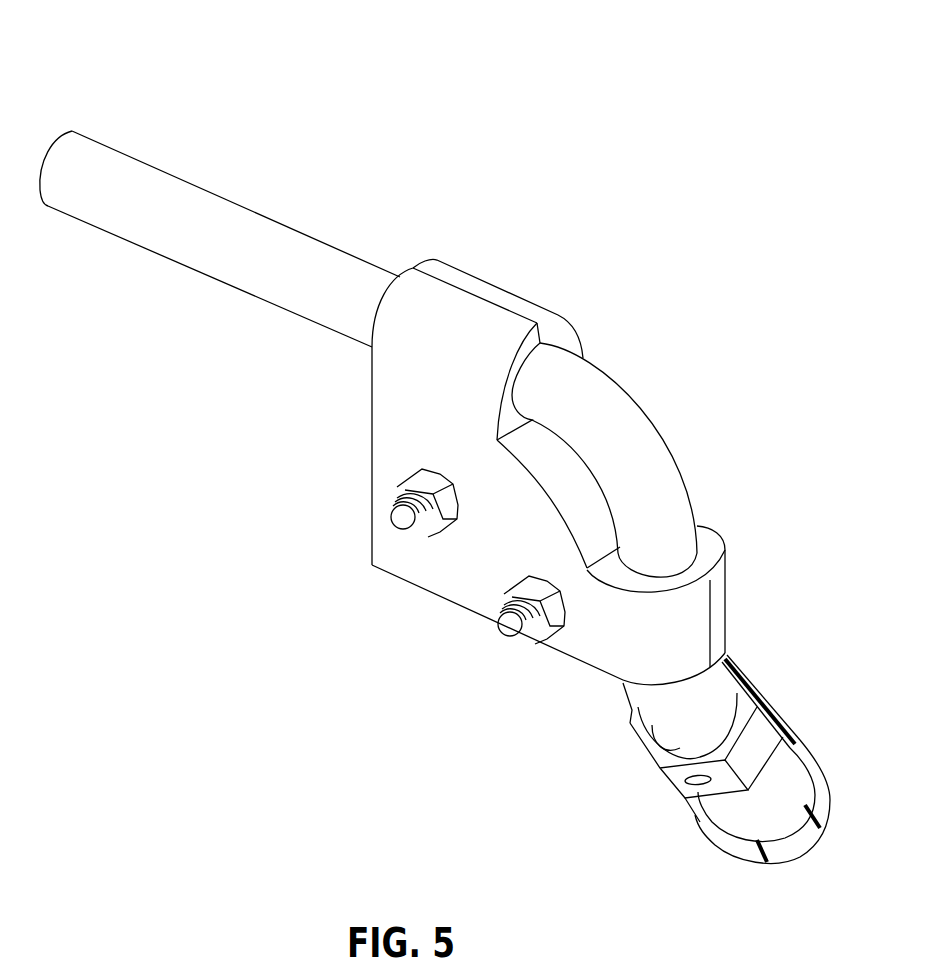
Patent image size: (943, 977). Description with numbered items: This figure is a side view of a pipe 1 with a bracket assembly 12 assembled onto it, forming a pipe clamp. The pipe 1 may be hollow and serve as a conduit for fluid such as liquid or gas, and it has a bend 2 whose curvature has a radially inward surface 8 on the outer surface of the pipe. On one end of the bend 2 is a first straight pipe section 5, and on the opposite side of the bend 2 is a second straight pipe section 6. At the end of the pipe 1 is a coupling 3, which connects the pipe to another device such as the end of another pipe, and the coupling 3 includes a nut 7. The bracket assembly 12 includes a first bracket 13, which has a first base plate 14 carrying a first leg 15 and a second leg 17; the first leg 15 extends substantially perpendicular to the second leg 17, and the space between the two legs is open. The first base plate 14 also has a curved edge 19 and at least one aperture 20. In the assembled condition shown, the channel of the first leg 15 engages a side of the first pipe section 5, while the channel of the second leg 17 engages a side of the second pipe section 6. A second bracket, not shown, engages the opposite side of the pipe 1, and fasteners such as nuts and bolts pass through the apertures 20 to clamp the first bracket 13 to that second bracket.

The pipe 1 is at (377, 147).
The bend 2 is at (619, 447).
The coupling 3 is at (793, 717).
The first straight pipe section 5 is at (162, 278).
The second straight pipe section 6 is at (632, 707).
The nut 7 is at (658, 793).
The radially inward surface 8 is at (607, 493).
The bracket assembly 12 is at (459, 466).
The first bracket 13 is at (408, 607).
The first base plate 14 is at (392, 562).
The first leg 15 is at (522, 280).
The second leg 17 is at (735, 597).
The curved edge 19 is at (557, 470).
The aperture 20 is at (387, 483).